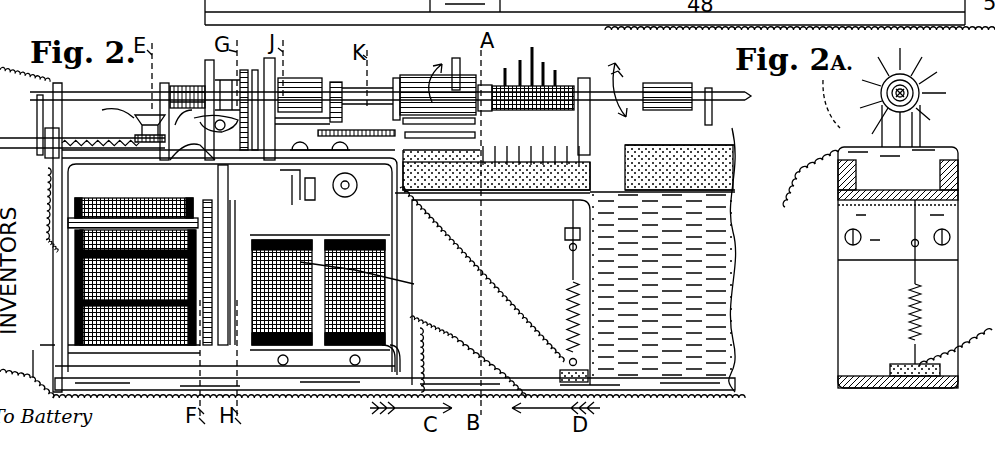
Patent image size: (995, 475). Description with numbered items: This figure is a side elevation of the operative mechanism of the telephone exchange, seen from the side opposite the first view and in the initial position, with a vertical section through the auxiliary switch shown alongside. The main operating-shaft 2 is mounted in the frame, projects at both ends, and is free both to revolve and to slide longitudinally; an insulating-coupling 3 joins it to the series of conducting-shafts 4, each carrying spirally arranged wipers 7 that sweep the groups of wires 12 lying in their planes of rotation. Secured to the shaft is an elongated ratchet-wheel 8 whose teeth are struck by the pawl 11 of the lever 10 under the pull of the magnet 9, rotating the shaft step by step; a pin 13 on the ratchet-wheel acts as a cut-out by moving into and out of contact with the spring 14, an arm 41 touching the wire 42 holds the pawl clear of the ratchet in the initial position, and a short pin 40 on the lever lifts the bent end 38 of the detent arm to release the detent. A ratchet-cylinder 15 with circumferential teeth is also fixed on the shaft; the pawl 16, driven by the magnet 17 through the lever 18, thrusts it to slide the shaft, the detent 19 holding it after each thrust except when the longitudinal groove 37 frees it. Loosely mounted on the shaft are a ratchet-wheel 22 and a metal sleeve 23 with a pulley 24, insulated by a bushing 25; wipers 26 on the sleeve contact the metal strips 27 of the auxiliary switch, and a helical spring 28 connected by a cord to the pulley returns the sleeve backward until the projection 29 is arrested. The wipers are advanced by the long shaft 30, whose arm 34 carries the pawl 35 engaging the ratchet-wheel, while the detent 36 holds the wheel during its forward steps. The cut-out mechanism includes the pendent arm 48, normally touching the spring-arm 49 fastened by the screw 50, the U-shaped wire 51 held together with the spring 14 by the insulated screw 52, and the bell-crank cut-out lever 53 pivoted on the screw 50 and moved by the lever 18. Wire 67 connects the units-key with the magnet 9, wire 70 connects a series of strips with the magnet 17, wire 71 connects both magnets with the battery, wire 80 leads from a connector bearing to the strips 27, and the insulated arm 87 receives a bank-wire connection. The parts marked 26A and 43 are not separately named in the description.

In FIG. 2, the main operating-shaft 2 is at (112, 92).
In FIG. 2A, the main operating-shaft 2 is at (915, 75).
In FIG. 2, the insulating-coupling 3 is at (680, 100).
In FIG. 2, the conducting-shafts 4 is at (716, 99).
In FIG. 2, the wipers 7 is at (738, 140).
In FIG. 2, the elongated ratchet-wheel 8 is at (298, 96).
In FIG. 2, the magnet 9 is at (364, 279).
In FIG. 2, the lever 10 is at (262, 78).
In FIG. 2, the pawl 11 is at (268, 122).
In FIG. 2, the wires 12 is at (678, 147).
In FIG. 2, the pin 13 is at (377, 101).
In FIG. 2, the spring 14 is at (336, 89).
In FIG. 2, the ratchet-cylinder 15 is at (188, 93).
In FIG. 2, the pawl 16 is at (197, 92).
In FIG. 2, the magnet 17 is at (110, 215).
In FIG. 2, the lever 18 is at (216, 284).
In FIG. 2, the detent 19 is at (140, 133).
In FIG. 2, the ratchet-wheel 22 is at (412, 92).
In FIG. 2, the metal sleeve 23 is at (496, 86).
In FIG. 2A, the metal sleeve 23 is at (918, 91).
In FIG. 2, the pulley 24 is at (573, 78).
In FIG. 2A, the bushing 25 is at (925, 88).
In FIG. 2, the wipers 26 is at (531, 63).
In FIG. 2A, the wipers 26 is at (871, 45).
In FIG. 2A, the pin 26A is at (881, 90).
In FIG. 2, the metal strips 27 is at (555, 149).
In FIG. 2A, the metal strips 27 is at (840, 156).
In FIG. 2, the helical spring 28 is at (560, 212).
In FIG. 2A, the helical spring 28 is at (990, 122).
In FIG. 2, the projection 29 is at (407, 150).
In FIG. 2, the long shaft 30 is at (423, 150).
In FIG. 2, the arm 34 is at (455, 58).
In FIG. 2, the pawl 35 is at (426, 70).
In FIG. 2, the detent 36 is at (488, 205).
In FIG. 2, the groove 37 is at (193, 95).
In FIG. 2, the bent end of detent arm 38 is at (35, 118).
In FIG. 2, the short pin 40 is at (200, 182).
In FIG. 2, the arm 41 is at (268, 102).
In FIG. 2, the wire 42 is at (211, 83).
In FIG. 2, the block 43 is at (290, 82).
In FIG. 2, the pendent arm 48 is at (407, 252).
In FIG. 2A, the pendent arm 48 is at (971, 336).
In FIG. 2, the spring-arm 49 is at (219, 261).
In FIG. 2, the screw 50 is at (162, 300).
In FIG. 2, the U-shaped wire 51 is at (352, 187).
In FIG. 2, the screw 52 is at (322, 147).
In FIG. 2, the bell-crank cut-out lever 53 is at (287, 185).
In FIG. 2, the wire 67 is at (444, 315).
In FIG. 2, the wire 70 is at (48, 250).
In FIG. 2, the wire 71 is at (32, 358).
In FIG. 2A, the wire 80 is at (810, 179).
In FIG. 2, the insulated arm 87 is at (27, 162).